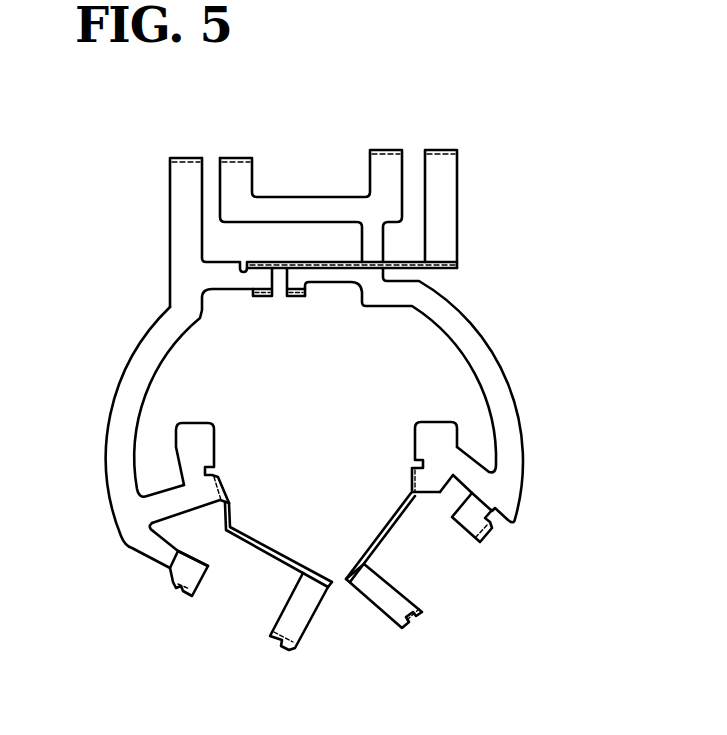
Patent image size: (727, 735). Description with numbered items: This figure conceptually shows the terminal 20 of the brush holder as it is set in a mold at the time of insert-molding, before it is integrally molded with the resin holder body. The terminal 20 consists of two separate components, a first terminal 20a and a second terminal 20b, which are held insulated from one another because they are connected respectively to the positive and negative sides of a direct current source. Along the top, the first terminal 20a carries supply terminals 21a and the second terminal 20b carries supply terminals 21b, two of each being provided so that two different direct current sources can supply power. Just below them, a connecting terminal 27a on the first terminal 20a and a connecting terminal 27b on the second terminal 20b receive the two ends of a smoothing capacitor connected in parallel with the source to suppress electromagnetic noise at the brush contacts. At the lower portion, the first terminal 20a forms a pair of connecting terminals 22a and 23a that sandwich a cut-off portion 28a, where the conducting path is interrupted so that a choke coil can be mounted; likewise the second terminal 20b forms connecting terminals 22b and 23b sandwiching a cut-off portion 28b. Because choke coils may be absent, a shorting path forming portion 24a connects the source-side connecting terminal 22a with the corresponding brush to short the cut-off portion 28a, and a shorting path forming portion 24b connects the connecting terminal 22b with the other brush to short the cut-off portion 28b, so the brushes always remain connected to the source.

The terminal 20 is at (538, 238).
The first terminal 20a is at (503, 383).
The second terminal 20b is at (130, 400).
The supply terminal 21a is at (237, 167).
The supply terminal 21b is at (176, 189).
The connecting terminal 22a is at (489, 533).
The connecting terminal 22b is at (182, 591).
The connecting terminal 23a is at (420, 614).
The connecting terminal 23b is at (278, 640).
The shorting path forming portion 24a is at (468, 470).
The shorting path forming portion 24b is at (163, 500).
The connecting terminal 27a is at (294, 297).
The connecting terminal 27b is at (262, 297).
The cut-off portion 28a is at (438, 570).
The cut-off portion 28b is at (242, 595).